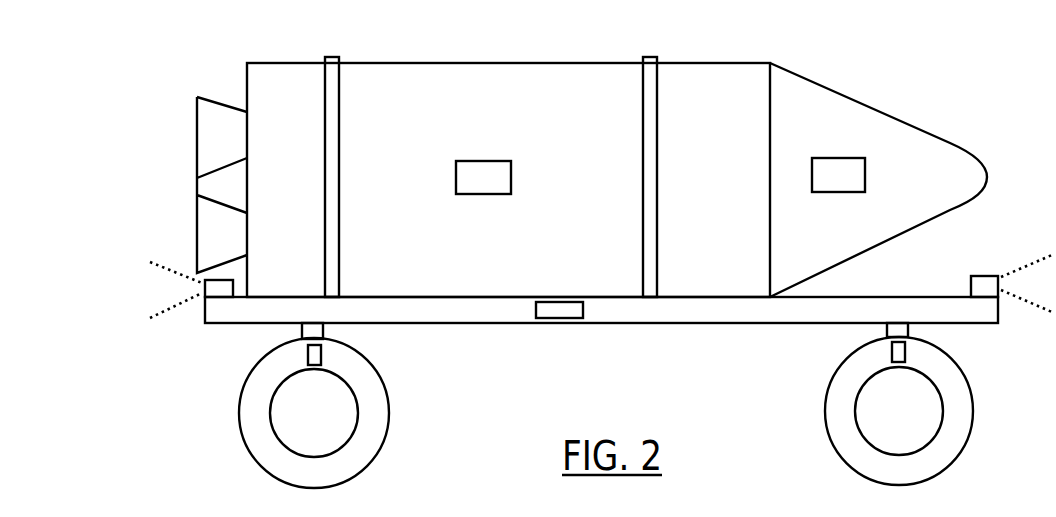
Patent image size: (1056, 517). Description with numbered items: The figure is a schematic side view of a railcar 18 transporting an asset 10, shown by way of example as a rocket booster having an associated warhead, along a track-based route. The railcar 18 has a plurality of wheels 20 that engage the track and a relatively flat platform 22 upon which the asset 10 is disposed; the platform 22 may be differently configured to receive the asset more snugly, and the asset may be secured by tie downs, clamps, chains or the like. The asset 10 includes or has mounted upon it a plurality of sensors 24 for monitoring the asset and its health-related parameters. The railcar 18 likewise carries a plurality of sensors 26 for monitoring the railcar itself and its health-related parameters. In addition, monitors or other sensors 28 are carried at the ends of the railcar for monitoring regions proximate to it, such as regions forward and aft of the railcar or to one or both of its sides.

The asset 10 is at (708, 80).
The railcar 18 is at (601, 353).
The wheels 20 is at (377, 413).
The platform 22 is at (478, 297).
The sensors 24 is at (482, 161).
The sensors 26 is at (563, 310).
The sensors 28 is at (215, 292).